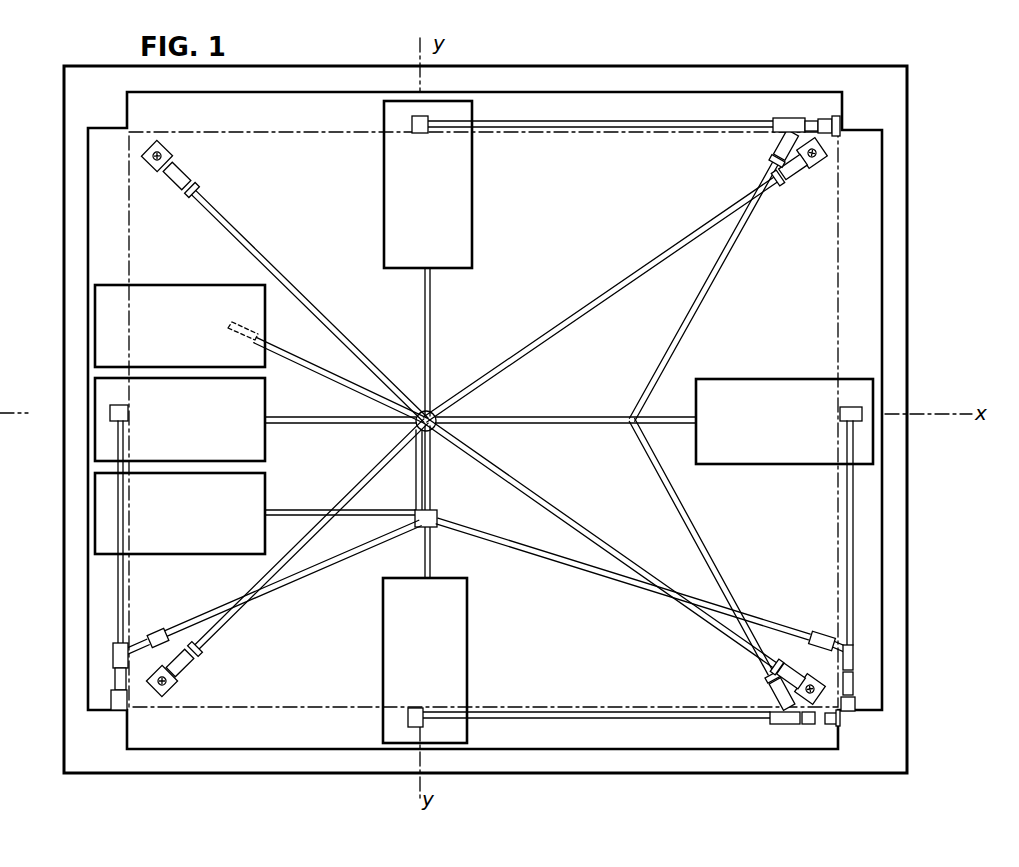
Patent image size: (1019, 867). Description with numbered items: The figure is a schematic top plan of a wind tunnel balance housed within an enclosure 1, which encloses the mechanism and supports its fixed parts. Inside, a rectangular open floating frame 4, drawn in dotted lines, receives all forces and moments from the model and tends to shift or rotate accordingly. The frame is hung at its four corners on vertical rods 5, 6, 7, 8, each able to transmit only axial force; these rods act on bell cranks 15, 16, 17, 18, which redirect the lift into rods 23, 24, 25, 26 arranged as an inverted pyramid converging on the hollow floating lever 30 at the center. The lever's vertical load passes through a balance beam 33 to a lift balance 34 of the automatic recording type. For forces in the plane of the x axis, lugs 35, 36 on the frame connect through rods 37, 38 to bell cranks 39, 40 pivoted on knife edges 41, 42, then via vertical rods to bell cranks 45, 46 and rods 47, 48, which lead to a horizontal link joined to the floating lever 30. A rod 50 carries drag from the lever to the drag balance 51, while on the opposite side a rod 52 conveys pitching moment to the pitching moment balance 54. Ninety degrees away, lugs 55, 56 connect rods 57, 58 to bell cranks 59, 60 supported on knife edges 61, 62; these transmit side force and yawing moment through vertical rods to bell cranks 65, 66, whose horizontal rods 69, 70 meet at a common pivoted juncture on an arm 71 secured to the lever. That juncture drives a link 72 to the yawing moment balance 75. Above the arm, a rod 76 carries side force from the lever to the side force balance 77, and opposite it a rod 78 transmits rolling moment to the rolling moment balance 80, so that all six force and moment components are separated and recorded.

The enclosure 1 is at (66, 707).
The floating frame 4 is at (310, 706).
The vertical rod 5 is at (160, 688).
The vertical rod 6 is at (818, 664).
The vertical rod 7 is at (164, 149).
The vertical rod 8 is at (812, 164).
The bell crank 15 is at (188, 672).
The bell crank 16 is at (788, 664).
The bell crank 17 is at (188, 171).
The bell crank 18 is at (788, 180).
The rod 23 is at (260, 581).
The rod 24 is at (612, 543).
The rod 25 is at (326, 300).
The rod 26 is at (622, 284).
The floating lever 30 is at (437, 426).
The balance beam 33 is at (295, 355).
The lift balance 34 is at (222, 270).
The lug 35 is at (415, 707).
The lug 36 is at (418, 136).
The rod 37 is at (664, 719).
The rod 38 is at (614, 122).
The bell crank 39 is at (784, 725).
The bell crank 40 is at (790, 117).
The knife edge 41 is at (832, 728).
The knife edge 42 is at (832, 116).
The bell crank 45 is at (774, 698).
The bell crank 46 is at (777, 150).
The rod 47 is at (726, 588).
The rod 48 is at (714, 280).
The rod 50 is at (669, 414).
The drag balance 51 is at (790, 366).
The rod 52 is at (348, 424).
The pitching moment balance 54 is at (265, 446).
The lug 55 is at (110, 414).
The lug 56 is at (860, 413).
The rod 57 is at (118, 500).
The rod 58 is at (862, 533).
The bell crank 59 is at (115, 679).
The bell crank 60 is at (855, 681).
The knife edge 61 is at (112, 700).
The knife edge 62 is at (855, 703).
The bell crank 65 is at (149, 634).
The bell crank 66 is at (824, 632).
The rod 69 is at (346, 558).
The rod 70 is at (572, 562).
The arm 71 is at (437, 509).
The link 72 is at (414, 512).
The yawing moment balance 75 is at (157, 555).
The rod 76 is at (431, 548).
The side force balance 77 is at (462, 660).
The rod 78 is at (431, 320).
The rolling moment balance 80 is at (462, 255).